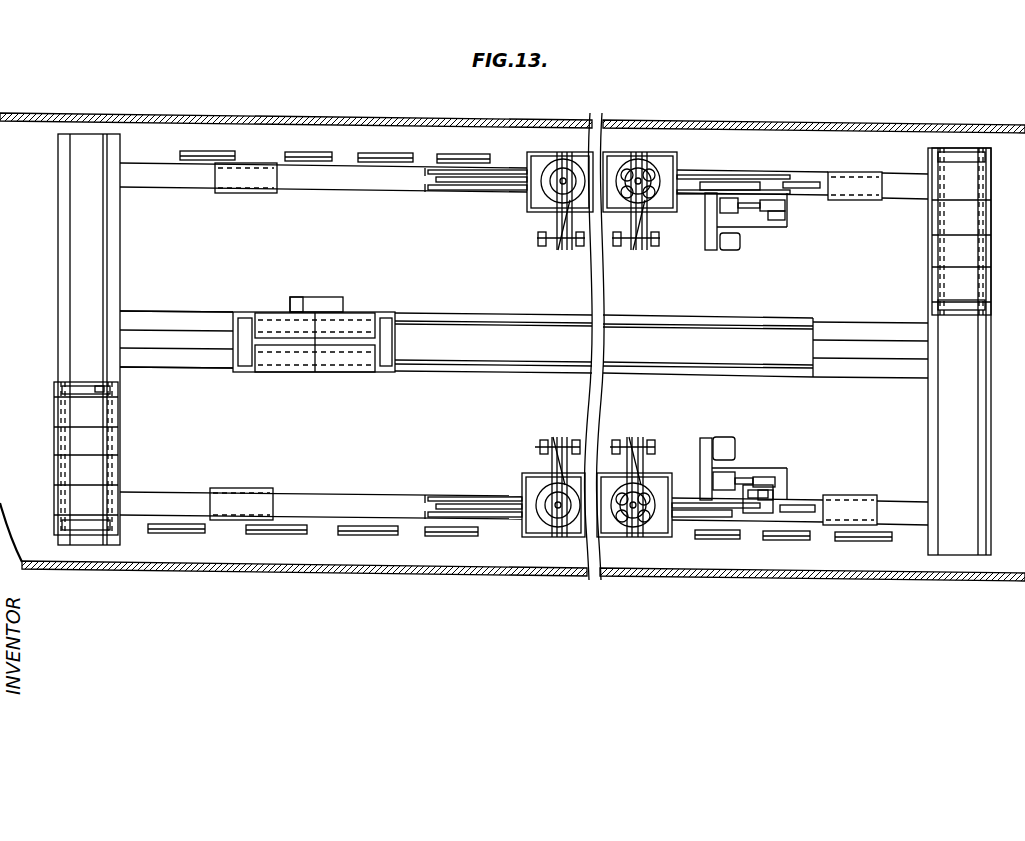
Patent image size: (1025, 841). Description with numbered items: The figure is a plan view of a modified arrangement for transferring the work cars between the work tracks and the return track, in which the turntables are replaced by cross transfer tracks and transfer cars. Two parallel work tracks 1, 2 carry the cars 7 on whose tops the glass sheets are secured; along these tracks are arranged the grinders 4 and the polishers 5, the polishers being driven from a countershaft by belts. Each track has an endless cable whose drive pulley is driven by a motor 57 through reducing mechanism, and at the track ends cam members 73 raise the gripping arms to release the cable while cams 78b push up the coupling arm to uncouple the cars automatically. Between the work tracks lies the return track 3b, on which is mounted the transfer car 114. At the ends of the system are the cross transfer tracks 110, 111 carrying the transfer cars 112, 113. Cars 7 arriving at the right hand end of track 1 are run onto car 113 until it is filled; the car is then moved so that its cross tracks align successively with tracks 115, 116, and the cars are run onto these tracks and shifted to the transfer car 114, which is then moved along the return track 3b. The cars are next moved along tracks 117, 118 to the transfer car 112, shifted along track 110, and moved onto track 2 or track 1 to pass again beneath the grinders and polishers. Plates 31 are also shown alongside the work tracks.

The work track 1 is at (345, 188).
The work track 2 is at (362, 500).
The return track 3b is at (448, 320).
The grinder 4 is at (545, 177).
The polisher 5 is at (640, 176).
The car 7 is at (258, 180).
The plate 31 is at (212, 157).
The motor 57 is at (736, 252).
The cam member 73 is at (694, 200).
The cam 78b is at (801, 190).
The cross transfer track 110 is at (92, 254).
The cross transfer track 111 is at (960, 416).
The transfer car 112 is at (58, 384).
The transfer car 113 is at (932, 302).
The transfer car 114 is at (383, 320).
The track 115 is at (835, 322).
The track 116 is at (836, 368).
The track 117 is at (176, 320).
The track 118 is at (171, 360).